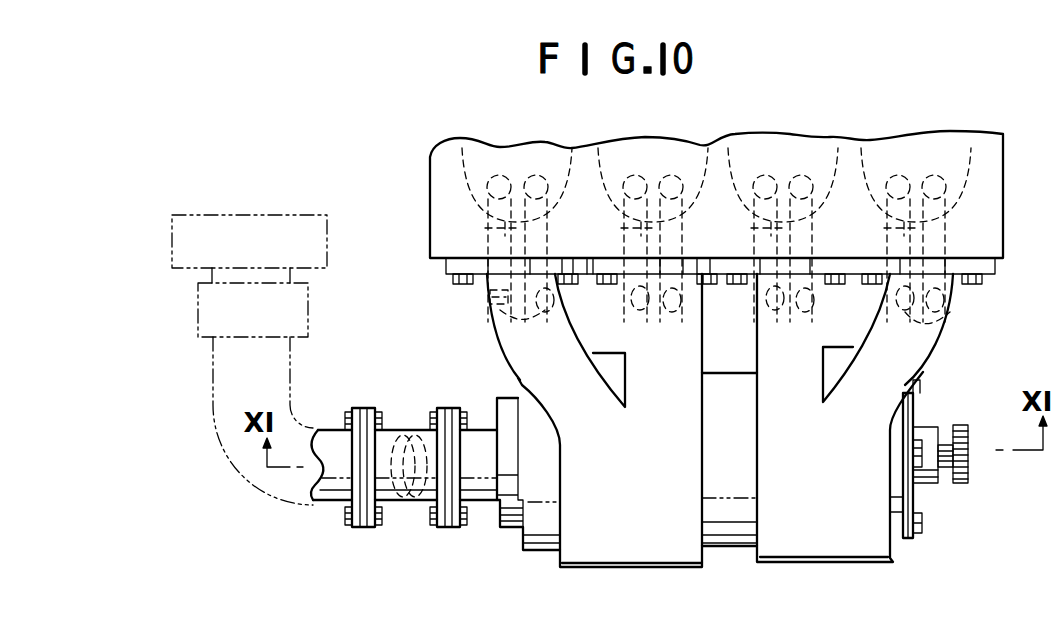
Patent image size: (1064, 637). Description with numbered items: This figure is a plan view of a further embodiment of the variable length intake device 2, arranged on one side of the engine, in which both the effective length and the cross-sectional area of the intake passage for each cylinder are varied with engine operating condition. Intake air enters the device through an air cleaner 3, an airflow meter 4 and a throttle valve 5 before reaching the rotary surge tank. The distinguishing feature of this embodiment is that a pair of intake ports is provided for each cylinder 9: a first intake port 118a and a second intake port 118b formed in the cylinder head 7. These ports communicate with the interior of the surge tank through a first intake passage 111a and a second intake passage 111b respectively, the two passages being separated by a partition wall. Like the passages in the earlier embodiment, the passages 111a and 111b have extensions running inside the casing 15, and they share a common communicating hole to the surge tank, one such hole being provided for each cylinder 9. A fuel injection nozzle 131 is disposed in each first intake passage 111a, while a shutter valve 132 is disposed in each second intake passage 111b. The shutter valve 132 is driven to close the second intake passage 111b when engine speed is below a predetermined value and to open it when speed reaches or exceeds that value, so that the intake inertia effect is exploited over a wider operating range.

The variable length intake device 2 is at (522, 558).
The air cleaner 3 is at (180, 239).
The airflow meter 4 is at (205, 317).
The throttle valve 5 is at (421, 482).
The cylinder head 7 is at (992, 200).
The cylinder 9 is at (556, 163).
The casing 15 is at (733, 547).
The first intake passage 111a is at (512, 352).
The second intake passage 111b is at (490, 327).
The first intake port 118a is at (552, 222).
The second intake port 118b is at (492, 242).
The fuel injection nozzle 131 is at (556, 301).
The shutter valve 132 is at (488, 297).